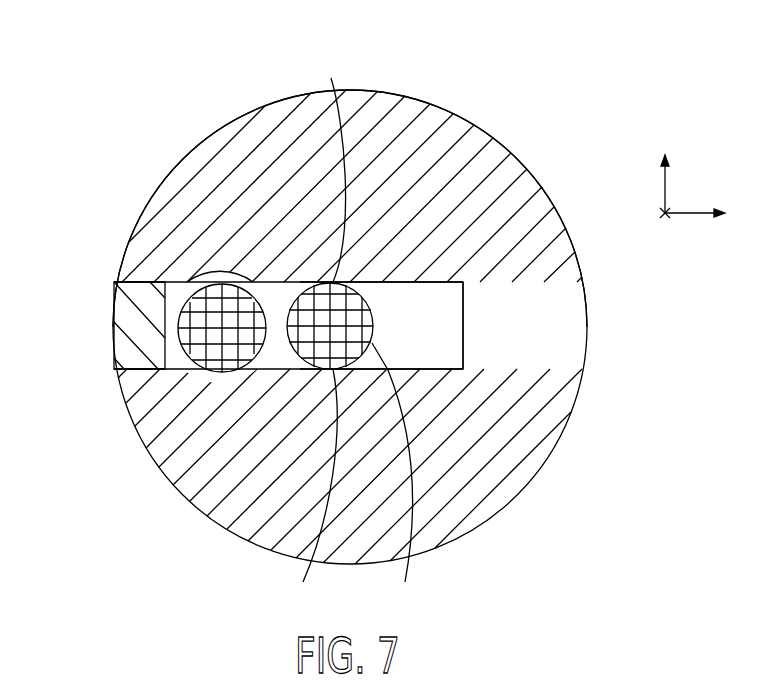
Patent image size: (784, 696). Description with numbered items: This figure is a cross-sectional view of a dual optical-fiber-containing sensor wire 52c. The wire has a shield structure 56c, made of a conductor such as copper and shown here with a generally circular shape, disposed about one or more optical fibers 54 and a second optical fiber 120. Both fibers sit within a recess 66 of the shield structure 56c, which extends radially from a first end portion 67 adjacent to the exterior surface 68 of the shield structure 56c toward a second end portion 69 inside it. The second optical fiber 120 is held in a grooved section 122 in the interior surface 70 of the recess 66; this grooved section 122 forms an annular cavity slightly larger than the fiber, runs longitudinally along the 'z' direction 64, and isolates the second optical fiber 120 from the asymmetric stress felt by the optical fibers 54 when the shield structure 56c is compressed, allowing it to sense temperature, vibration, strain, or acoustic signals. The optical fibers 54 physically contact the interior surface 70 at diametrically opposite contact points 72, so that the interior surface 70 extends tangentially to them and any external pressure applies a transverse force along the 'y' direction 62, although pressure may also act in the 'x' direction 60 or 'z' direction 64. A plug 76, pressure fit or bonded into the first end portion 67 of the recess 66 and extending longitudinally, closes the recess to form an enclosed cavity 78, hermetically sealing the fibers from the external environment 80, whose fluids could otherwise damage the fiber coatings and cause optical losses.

The dual optical-fiber-containing sensor wire 52c is at (133, 53).
The optical fibers 54 is at (394, 478).
The shield structure 56c is at (518, 160).
The 'x' direction 60 is at (693, 213).
The 'y' direction 62 is at (667, 187).
The 'z' direction 64 is at (663, 212).
The recess 66 is at (453, 332).
The first end portion 67 is at (113, 376).
The exterior surface 68 is at (390, 93).
The second end portion 69 is at (463, 302).
The interior surface 70 is at (443, 373).
The diametrically opposite contact points 72 is at (318, 330).
The plug 76 is at (113, 328).
The enclosed cavity 78 is at (412, 298).
The external environment 80 is at (591, 98).
The second optical fiber 120 is at (197, 338).
The grooved section 122 is at (116, 298).